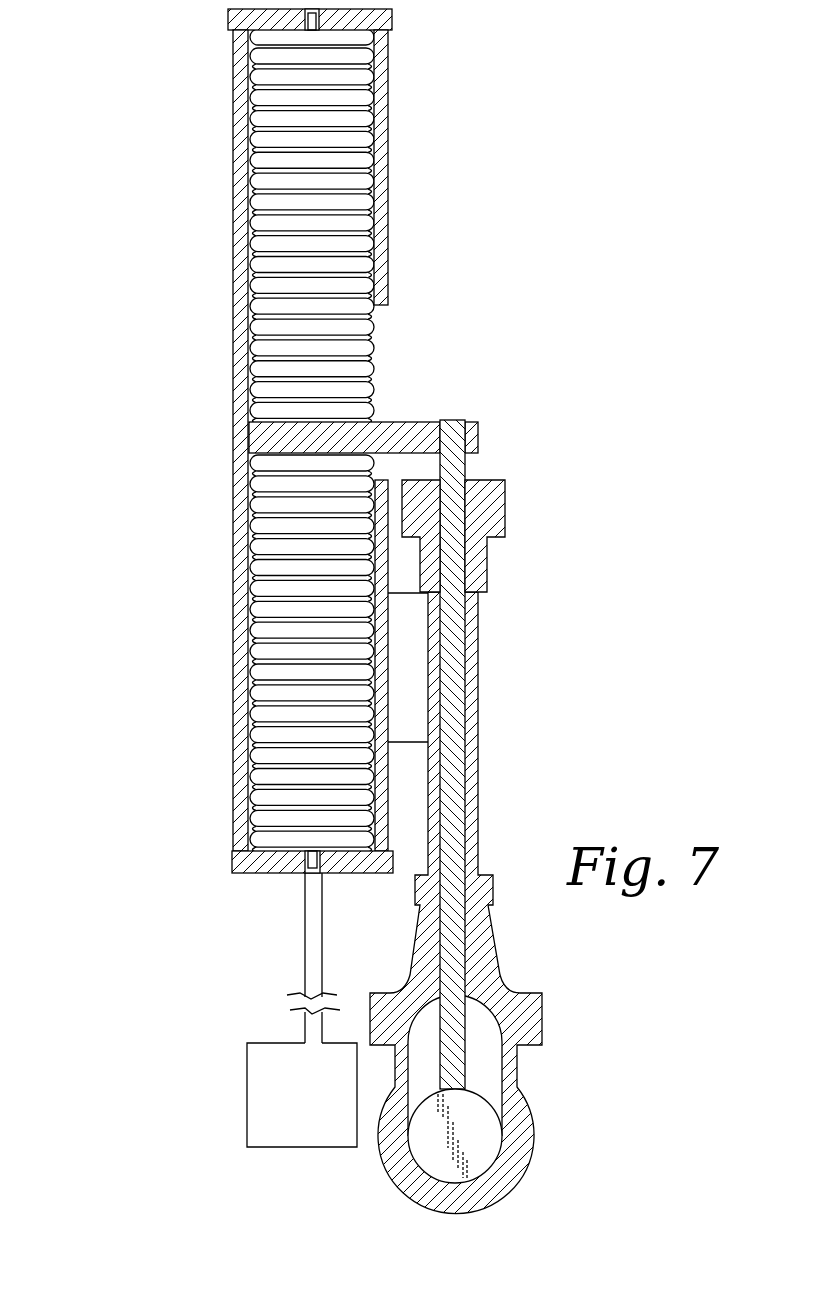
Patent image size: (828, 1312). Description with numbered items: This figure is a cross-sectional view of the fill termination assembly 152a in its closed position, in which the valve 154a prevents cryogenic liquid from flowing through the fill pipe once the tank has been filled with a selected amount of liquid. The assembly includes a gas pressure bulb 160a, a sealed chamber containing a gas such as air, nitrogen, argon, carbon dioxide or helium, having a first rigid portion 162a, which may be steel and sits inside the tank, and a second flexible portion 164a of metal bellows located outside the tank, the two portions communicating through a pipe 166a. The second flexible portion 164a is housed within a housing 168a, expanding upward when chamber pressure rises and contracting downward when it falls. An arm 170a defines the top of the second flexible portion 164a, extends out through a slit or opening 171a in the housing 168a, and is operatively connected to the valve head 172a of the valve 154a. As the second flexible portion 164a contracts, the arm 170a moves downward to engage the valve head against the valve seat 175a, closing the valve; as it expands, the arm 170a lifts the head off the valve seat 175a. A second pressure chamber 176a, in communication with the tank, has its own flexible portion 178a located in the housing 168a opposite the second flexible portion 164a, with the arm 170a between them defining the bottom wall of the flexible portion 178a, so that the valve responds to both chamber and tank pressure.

The fill termination assembly 152a is at (495, 137).
The valve 154a is at (568, 1040).
The gas pressure bulb 160a is at (261, 1021).
The first rigid portion 162a is at (262, 1112).
The second flexible portion 164a is at (293, 738).
The pipe 166a is at (315, 928).
The housing 168a is at (232, 319).
The arm 170a is at (413, 423).
The slit or opening 171a is at (382, 315).
The valve head 172a is at (451, 676).
The valve seat 175a is at (505, 1152).
The second pressure chamber 176a is at (347, 112).
The flexible portion 178a is at (325, 251).